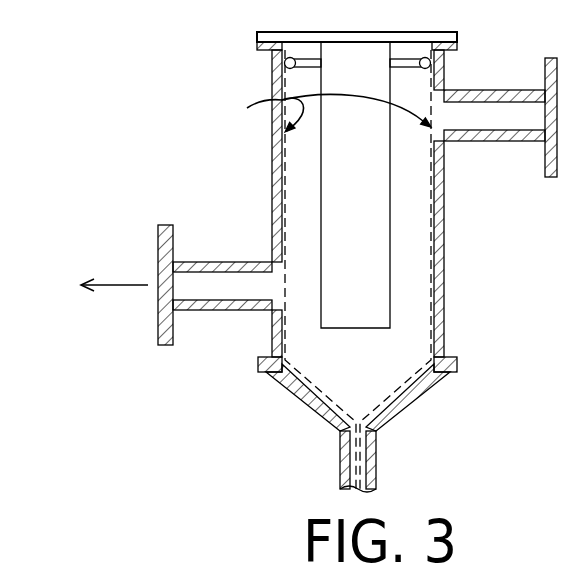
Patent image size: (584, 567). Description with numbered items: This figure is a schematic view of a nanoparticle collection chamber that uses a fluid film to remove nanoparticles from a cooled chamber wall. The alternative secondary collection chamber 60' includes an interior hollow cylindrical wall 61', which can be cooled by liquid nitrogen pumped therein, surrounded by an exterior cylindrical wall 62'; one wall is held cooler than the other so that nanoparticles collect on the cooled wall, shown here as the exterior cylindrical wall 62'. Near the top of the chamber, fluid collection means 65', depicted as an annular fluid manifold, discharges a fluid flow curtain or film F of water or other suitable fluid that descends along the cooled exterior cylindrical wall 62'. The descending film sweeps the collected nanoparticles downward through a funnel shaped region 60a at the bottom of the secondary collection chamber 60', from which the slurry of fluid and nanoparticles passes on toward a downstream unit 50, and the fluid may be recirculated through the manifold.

The secondary collection chamber 60' is at (357, 262).
The funnel shaped region 60a is at (320, 414).
The interior hollow cylindrical wall 61' is at (422, 185).
The exterior cylindrical wall 62' is at (235, 203).
The fluid collection means 65' is at (309, 56).
The fluid flow curtain or film F is at (324, 110).
The downstream unit (TO 50) 50 is at (87, 280).